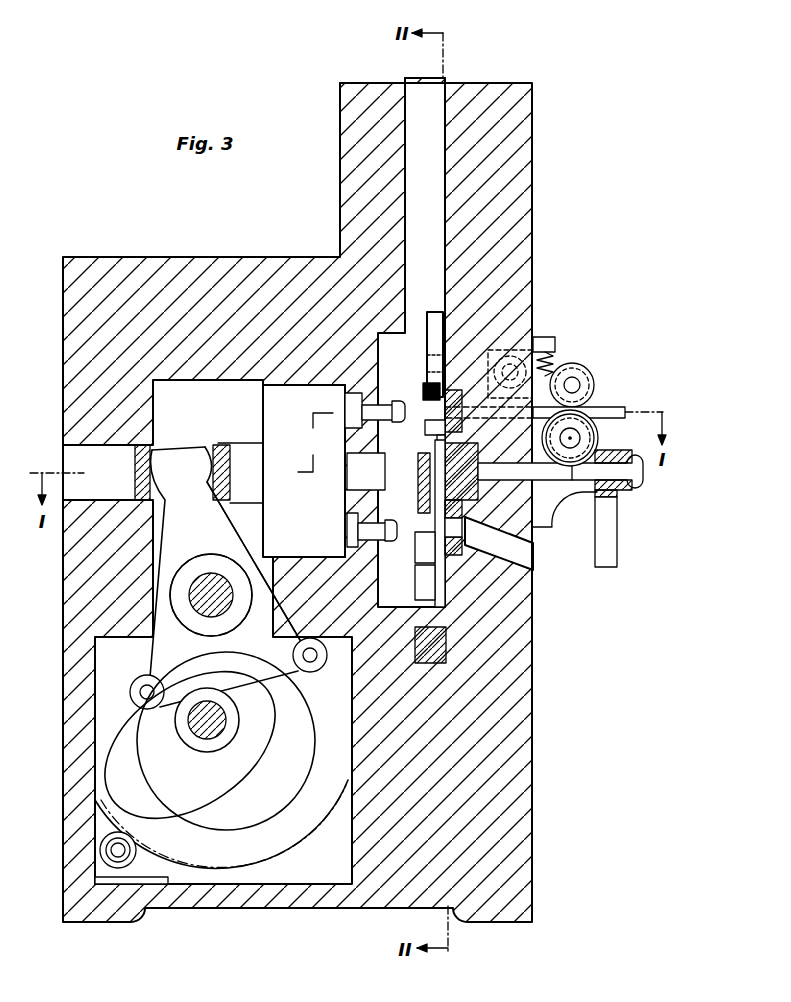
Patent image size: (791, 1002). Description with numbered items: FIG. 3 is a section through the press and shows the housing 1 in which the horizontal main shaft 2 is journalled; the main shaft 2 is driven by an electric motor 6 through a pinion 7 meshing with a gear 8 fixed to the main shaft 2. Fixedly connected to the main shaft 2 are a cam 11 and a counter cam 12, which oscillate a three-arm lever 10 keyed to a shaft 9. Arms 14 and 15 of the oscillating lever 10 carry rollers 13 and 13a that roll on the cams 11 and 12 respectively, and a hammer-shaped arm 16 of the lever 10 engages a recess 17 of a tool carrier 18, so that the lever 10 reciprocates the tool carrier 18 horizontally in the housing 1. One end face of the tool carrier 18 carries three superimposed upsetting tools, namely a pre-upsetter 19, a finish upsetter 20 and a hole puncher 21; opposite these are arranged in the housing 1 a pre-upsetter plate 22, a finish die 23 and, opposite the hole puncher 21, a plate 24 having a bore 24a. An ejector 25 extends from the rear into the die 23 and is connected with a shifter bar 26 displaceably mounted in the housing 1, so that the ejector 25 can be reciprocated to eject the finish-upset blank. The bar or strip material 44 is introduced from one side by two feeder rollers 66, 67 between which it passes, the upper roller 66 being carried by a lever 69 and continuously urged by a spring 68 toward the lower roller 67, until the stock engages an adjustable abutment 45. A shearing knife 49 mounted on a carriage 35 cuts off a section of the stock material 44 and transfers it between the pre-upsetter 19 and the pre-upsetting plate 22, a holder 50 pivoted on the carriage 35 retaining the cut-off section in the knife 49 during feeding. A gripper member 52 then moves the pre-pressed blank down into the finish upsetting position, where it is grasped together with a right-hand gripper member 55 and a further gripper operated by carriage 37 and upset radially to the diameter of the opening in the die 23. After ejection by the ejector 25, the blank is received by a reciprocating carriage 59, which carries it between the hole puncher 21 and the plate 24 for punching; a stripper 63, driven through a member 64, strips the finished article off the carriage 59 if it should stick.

The housing 1 is at (522, 726).
The main shaft 2 is at (233, 720).
The electric motor 6 is at (122, 873).
The pinion 7 is at (126, 842).
The gear 8 is at (174, 854).
The shaft 9 is at (222, 586).
The three-arm lever 10 is at (215, 566).
The cam 11 is at (218, 773).
The counter cam 12 is at (303, 750).
The roller 13 is at (143, 687).
The roller 13a is at (318, 668).
The arm 14 is at (158, 652).
The arm 15 is at (262, 647).
The hammer-shaped arm 16 is at (210, 515).
The recess 17 is at (168, 448).
The tool carrier 18 is at (275, 426).
The pre-upsetter 19 is at (384, 372).
The finish upsetter 20 is at (375, 481).
The hole puncher 21 is at (357, 516).
The pre-upsetter plate 22 is at (450, 395).
The finish die 23 is at (480, 450).
The plate 24 is at (462, 520).
The bore 24a is at (462, 548).
The ejector 25 is at (553, 473).
The shifter bar 26 is at (605, 538).
The carriage 35 is at (437, 443).
The carriage 37 is at (446, 641).
The bar or strip material 44 is at (603, 408).
The adjustable abutment 45 is at (392, 414).
The shearing knife 49 is at (438, 425).
The holder 50 is at (425, 393).
The gripper member 52 is at (433, 359).
The right-hand gripper member 55 is at (437, 482).
The reciprocating carriage 59 is at (418, 477).
The stripper 63 is at (440, 556).
The member 64 is at (415, 548).
The feeder roller 66 is at (585, 375).
The feeder roller 67 is at (592, 437).
The spring 68 is at (545, 377).
The lever 69 is at (560, 372).